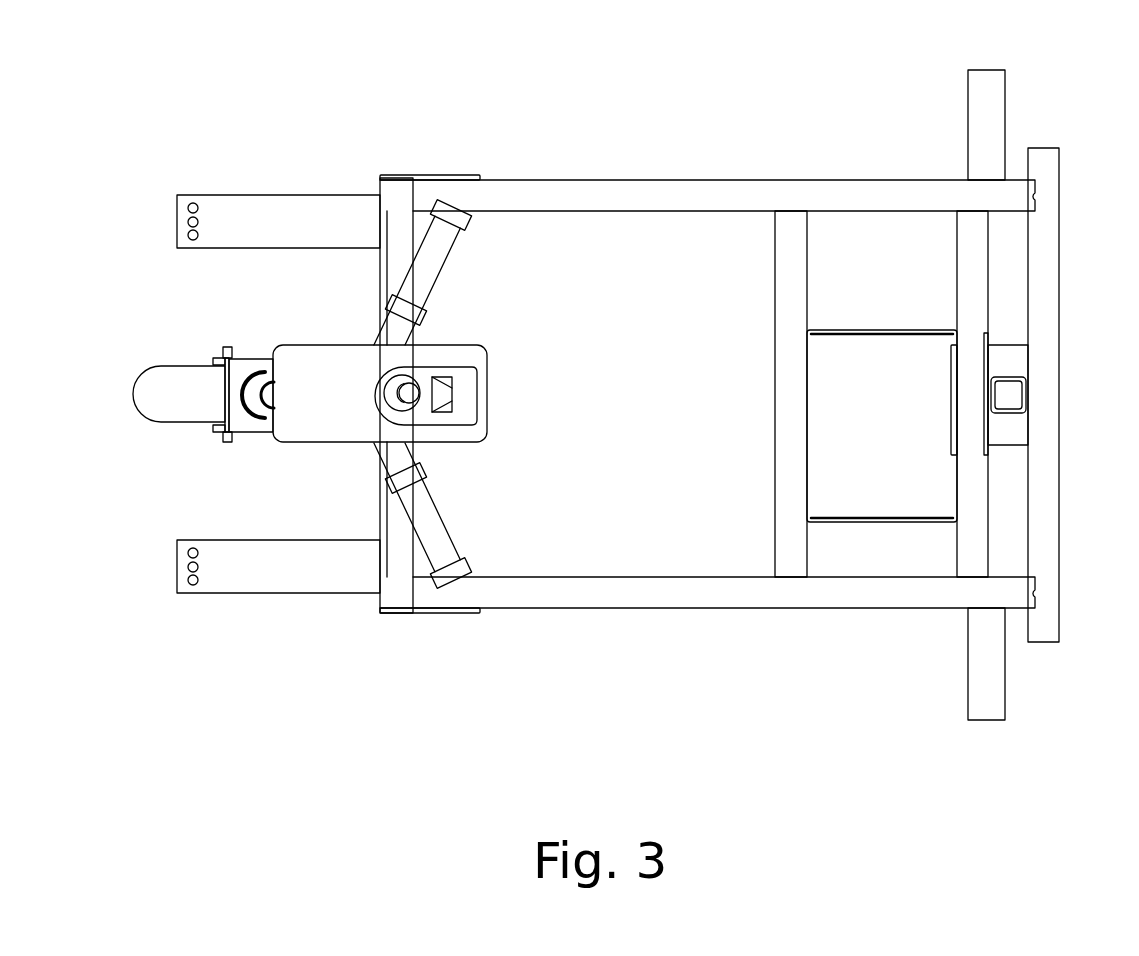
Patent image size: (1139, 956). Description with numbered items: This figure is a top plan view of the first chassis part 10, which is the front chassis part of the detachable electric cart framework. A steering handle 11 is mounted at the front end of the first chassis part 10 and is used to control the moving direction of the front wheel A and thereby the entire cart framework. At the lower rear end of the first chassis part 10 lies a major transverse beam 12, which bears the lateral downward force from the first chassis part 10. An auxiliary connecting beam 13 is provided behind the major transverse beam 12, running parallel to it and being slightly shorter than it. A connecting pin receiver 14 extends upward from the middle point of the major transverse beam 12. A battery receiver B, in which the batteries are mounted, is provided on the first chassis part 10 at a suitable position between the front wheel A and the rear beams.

The first chassis part 10 is at (705, 193).
The steering handle 11 is at (312, 367).
The major transverse beam 12 is at (983, 710).
The auxiliary connecting beam 13 is at (1048, 623).
The connecting pin receiver 14 is at (1010, 414).
The front wheel A is at (158, 412).
The battery receiver B is at (882, 528).